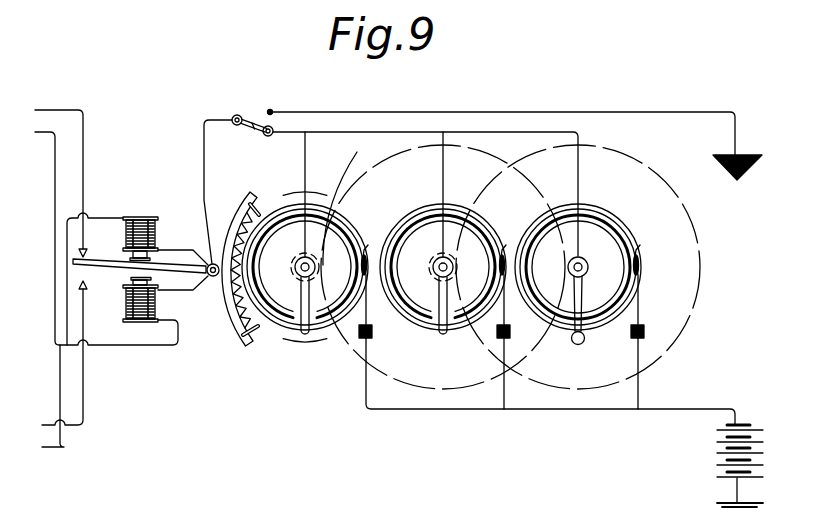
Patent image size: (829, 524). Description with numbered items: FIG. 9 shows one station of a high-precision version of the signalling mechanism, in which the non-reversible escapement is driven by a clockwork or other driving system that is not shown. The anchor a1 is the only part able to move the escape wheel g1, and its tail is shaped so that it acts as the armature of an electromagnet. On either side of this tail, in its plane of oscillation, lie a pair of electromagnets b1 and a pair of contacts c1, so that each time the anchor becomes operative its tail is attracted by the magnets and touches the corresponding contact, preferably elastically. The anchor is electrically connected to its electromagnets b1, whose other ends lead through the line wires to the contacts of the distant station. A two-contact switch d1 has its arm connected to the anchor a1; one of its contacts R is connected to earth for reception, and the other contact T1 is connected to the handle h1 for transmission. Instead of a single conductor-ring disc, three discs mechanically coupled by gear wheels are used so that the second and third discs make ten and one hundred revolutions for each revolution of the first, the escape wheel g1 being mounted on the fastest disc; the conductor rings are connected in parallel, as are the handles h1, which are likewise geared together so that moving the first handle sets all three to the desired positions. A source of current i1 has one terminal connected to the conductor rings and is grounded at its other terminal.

The earth contact of switch R is at (270, 110).
The two-contact switch d1 is at (242, 126).
The transmission contact of switch T1 is at (263, 136).
The anchor a1 is at (226, 222).
The electromagnets b1 is at (140, 217).
The contacts c1 is at (86, 254).
The escape wheel g1 is at (258, 330).
The handle or lever h1 is at (316, 334).
The source of current i1 is at (722, 466).